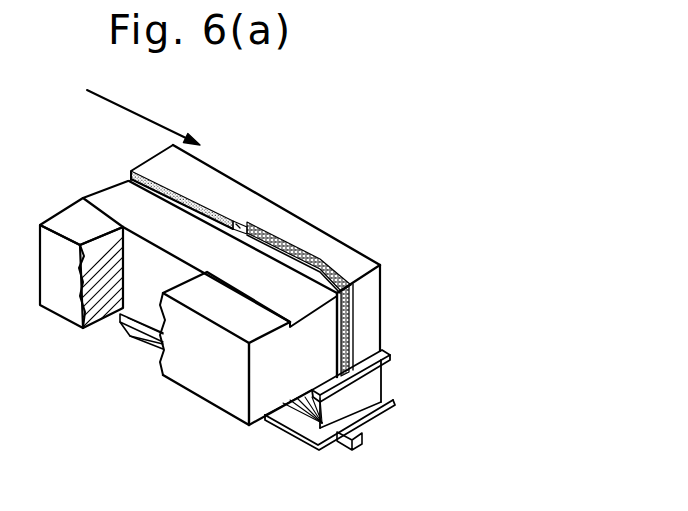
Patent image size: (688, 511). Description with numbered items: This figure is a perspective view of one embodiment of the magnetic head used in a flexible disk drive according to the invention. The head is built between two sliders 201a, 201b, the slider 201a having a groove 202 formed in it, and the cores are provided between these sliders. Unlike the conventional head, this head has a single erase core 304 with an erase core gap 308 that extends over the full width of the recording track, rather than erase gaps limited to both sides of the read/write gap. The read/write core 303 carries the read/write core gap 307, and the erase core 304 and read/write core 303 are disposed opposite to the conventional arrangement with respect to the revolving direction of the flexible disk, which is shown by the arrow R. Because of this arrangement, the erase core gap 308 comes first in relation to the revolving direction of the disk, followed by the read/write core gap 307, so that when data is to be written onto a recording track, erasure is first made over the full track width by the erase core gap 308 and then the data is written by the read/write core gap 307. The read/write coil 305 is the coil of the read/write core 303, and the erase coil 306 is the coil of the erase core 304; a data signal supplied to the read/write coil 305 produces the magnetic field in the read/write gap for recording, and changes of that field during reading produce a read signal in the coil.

The arrow indicating revolving direction R is at (147, 117).
The groove 202 is at (127, 202).
The slider 201a is at (340, 253).
The slider 201b is at (229, 390).
The erase core 304 is at (198, 193).
The erase core gap 308 is at (237, 215).
The read/write core gap 307 is at (265, 224).
The read/write core 303 is at (353, 318).
The erase coil 306 is at (143, 339).
The read/write coil 305 is at (363, 389).